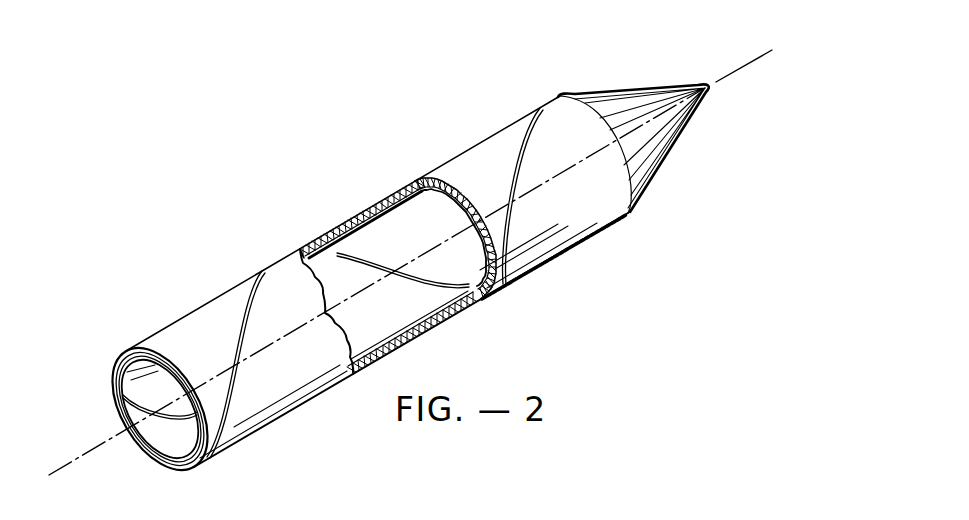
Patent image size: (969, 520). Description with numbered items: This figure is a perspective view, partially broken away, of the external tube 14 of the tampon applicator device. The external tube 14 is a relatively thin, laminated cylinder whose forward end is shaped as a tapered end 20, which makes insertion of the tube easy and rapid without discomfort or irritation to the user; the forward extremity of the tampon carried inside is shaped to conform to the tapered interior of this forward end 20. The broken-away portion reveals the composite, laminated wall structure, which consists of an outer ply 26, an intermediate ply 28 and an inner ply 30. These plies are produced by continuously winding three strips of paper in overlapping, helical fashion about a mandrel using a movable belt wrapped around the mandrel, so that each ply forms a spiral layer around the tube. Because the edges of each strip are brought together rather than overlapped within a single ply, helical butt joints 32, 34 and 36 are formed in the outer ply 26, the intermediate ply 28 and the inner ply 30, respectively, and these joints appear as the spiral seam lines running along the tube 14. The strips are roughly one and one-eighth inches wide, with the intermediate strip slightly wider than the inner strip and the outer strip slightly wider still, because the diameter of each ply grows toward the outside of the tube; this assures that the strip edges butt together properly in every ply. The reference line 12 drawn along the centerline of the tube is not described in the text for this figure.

The longitudinal axis of tubular device 12 is at (733, 72).
The external tube 14 is at (462, 142).
The forward tapered end 20 is at (627, 90).
The outer ply 26 is at (332, 230).
The intermediate ply 28 is at (398, 190).
The inner ply 30 is at (386, 216).
The helical butt joint 32 is at (247, 283).
The helical butt joint 34 is at (360, 215).
The helical butt joint 36 is at (377, 266).